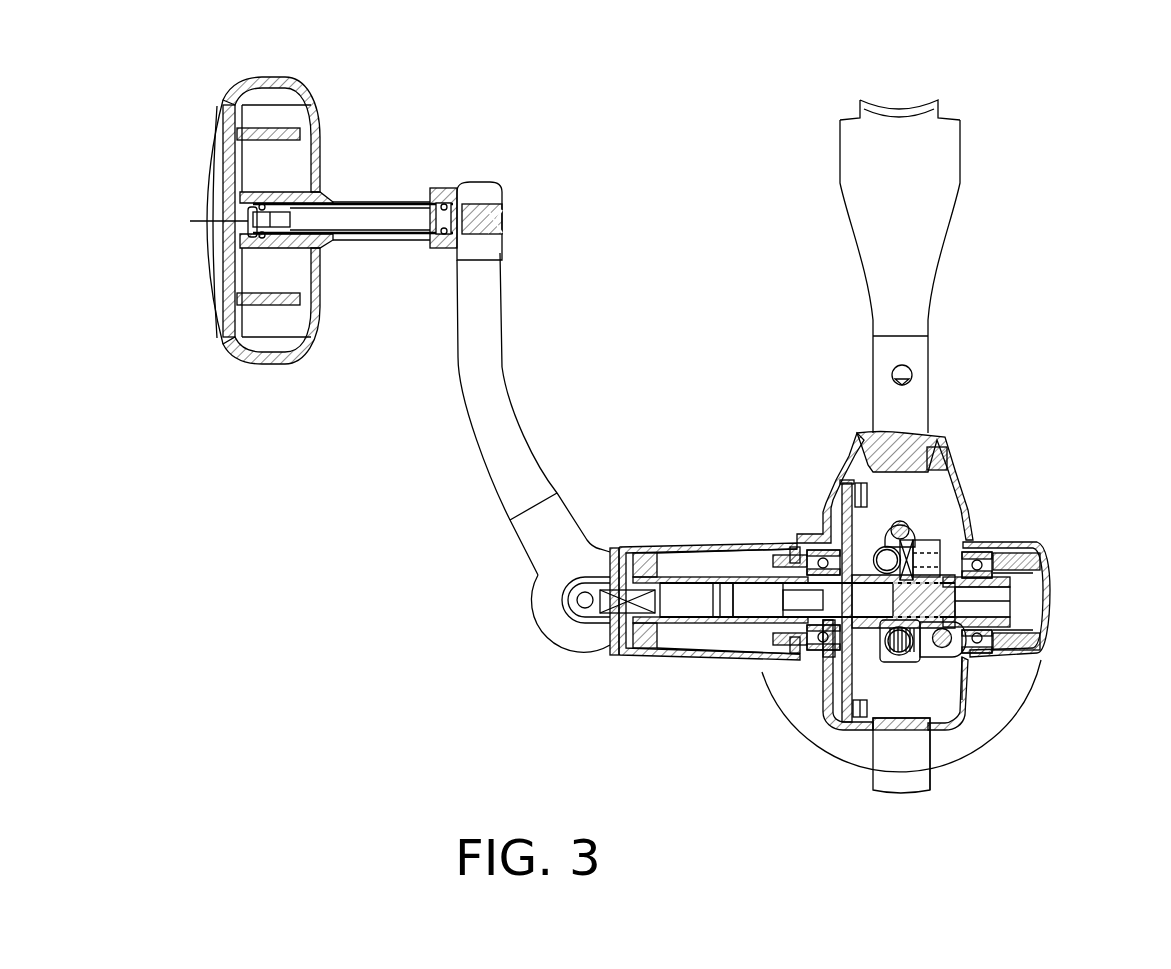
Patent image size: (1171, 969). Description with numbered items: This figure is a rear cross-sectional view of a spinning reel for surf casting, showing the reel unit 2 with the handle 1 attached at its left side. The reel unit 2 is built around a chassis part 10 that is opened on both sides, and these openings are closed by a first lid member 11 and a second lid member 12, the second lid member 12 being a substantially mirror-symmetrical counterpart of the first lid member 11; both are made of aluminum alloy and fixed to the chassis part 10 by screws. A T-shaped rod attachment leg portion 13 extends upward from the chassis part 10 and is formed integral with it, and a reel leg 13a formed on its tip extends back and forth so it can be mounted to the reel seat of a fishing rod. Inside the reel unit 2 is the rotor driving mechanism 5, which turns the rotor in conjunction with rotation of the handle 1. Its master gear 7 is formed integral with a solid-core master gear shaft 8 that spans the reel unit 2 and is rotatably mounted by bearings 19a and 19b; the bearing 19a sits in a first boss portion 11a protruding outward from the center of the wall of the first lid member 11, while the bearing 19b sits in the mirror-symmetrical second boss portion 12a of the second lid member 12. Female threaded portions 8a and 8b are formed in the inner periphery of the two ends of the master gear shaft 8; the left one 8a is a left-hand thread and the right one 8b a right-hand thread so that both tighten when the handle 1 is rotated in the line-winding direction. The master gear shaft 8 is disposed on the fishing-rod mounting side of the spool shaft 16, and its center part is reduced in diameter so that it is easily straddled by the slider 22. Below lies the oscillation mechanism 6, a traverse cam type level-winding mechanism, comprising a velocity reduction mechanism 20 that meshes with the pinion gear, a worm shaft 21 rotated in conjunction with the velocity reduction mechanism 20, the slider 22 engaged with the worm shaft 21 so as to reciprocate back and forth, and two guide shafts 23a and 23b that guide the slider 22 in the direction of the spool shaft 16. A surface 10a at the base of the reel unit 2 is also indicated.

The handle 1 is at (515, 320).
The reel unit 2 is at (958, 388).
The rotor driving mechanism 5 is at (834, 502).
The oscillation mechanism 6 is at (940, 670).
The master gear 7 is at (883, 728).
The master gear shaft 8 is at (960, 555).
The female threaded portion 8a is at (788, 592).
The female threaded portion 8b is at (1008, 580).
The chassis part 10 is at (870, 738).
The boss side face 10a is at (930, 730).
The first lid member 11 is at (842, 458).
The first boss portion 11a is at (827, 661).
The second lid member 12 is at (955, 450).
The second boss portion 12a is at (1033, 660).
The rod attachment leg portion 13 is at (915, 343).
The reel leg 13a is at (900, 114).
The spool shaft 16 is at (888, 662).
The bearing 19a is at (806, 560).
The bearing 19b is at (985, 550).
The velocity reduction mechanism 20 is at (875, 494).
The worm shaft 21 is at (874, 559).
The slider 22 is at (957, 608).
The guide shaft 23a is at (907, 518).
The guide shaft 23b is at (968, 662).